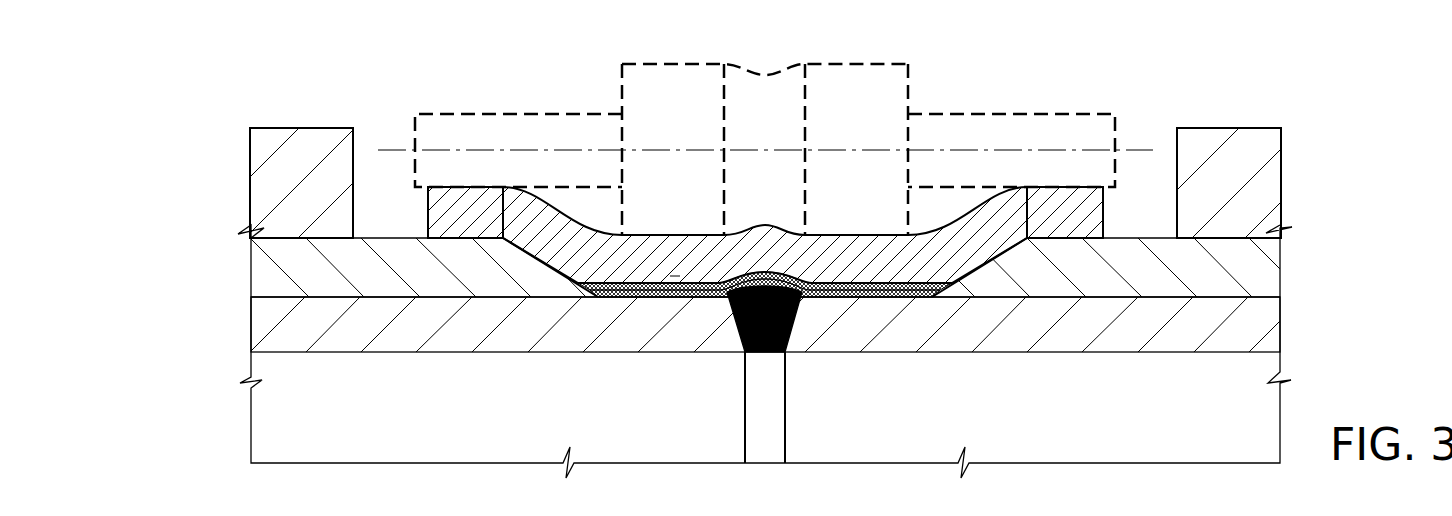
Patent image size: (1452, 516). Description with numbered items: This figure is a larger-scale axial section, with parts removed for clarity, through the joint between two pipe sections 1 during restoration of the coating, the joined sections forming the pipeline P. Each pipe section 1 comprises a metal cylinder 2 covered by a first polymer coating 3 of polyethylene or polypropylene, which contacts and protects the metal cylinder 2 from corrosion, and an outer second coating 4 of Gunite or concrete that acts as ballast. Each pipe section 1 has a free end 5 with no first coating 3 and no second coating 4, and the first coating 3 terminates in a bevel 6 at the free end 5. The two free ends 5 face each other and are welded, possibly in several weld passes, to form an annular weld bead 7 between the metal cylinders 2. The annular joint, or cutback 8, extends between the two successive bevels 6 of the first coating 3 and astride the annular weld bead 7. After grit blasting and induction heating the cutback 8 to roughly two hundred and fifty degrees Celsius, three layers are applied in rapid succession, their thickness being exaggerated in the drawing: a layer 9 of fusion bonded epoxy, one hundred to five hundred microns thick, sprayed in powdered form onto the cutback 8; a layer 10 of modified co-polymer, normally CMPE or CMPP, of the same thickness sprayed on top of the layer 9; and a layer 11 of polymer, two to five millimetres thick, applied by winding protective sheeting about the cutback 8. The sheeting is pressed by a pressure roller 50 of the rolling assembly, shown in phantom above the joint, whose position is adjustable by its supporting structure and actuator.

The pipe section 1 is at (216, 97).
The pipeline P is at (205, 148).
The metal cylinder 2 is at (298, 335).
The first polymer coating 3 is at (263, 270).
The second coating 4 is at (308, 142).
The free end 5 is at (549, 399).
The bevel 6 is at (545, 256).
The annular weld bead 7 is at (735, 345).
The annular joint (cutback) 8 is at (930, 216).
The layer of epoxy resin 9 is at (848, 298).
The layer of modified co-polymer 10 is at (648, 298).
The layer of polymer material 11 is at (670, 276).
The pressure roller 50 is at (887, 68).